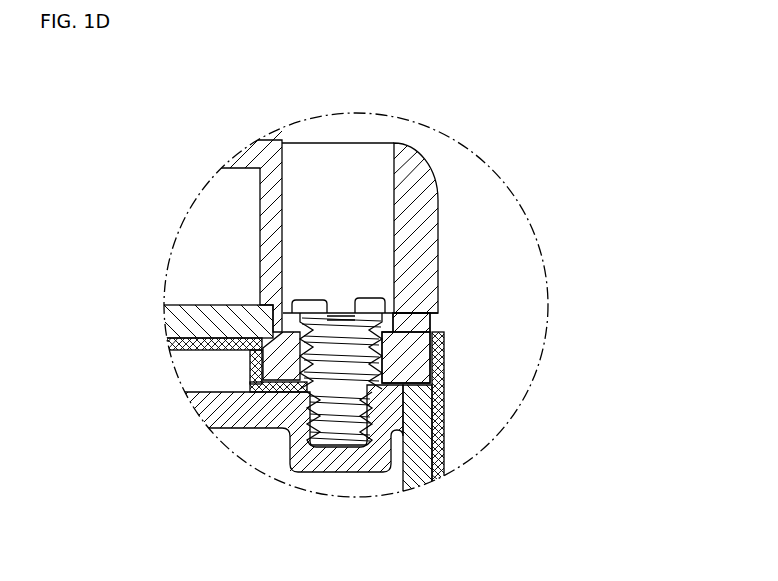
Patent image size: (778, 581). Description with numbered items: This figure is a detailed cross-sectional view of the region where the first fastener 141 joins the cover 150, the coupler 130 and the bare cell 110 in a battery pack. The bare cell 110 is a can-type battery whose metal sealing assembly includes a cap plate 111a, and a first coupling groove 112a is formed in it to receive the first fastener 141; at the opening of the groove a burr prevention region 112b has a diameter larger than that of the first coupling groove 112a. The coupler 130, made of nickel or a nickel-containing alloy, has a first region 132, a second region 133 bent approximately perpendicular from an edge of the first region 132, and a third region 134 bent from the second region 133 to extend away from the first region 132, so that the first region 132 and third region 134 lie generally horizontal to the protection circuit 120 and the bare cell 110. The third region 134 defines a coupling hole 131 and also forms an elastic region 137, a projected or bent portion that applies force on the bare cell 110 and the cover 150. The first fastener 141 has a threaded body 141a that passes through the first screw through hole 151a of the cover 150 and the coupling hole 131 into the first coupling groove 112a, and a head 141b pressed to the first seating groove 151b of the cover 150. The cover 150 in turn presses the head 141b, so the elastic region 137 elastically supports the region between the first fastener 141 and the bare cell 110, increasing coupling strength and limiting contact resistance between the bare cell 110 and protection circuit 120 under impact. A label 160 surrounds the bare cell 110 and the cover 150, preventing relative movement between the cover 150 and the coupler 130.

The bare cell 110 is at (448, 462).
The cap plate 111a is at (322, 450).
The first coupling groove 112a is at (443, 478).
The burr prevention region 112b is at (447, 467).
The protection circuit 120 is at (186, 328).
The coupler 130 is at (236, 383).
The coupling hole 131 is at (253, 393).
The first region 132 is at (168, 343).
The second region 133 is at (238, 377).
The third region 134 is at (226, 428).
The elastic region 137 is at (441, 381).
The first fastener 141 is at (617, 333).
The body 141a is at (384, 337).
The head 141b is at (405, 314).
The cover 150 is at (431, 199).
The first screw through hole 151a is at (253, 365).
The first seating groove 151b is at (263, 248).
The label 160 is at (443, 413).